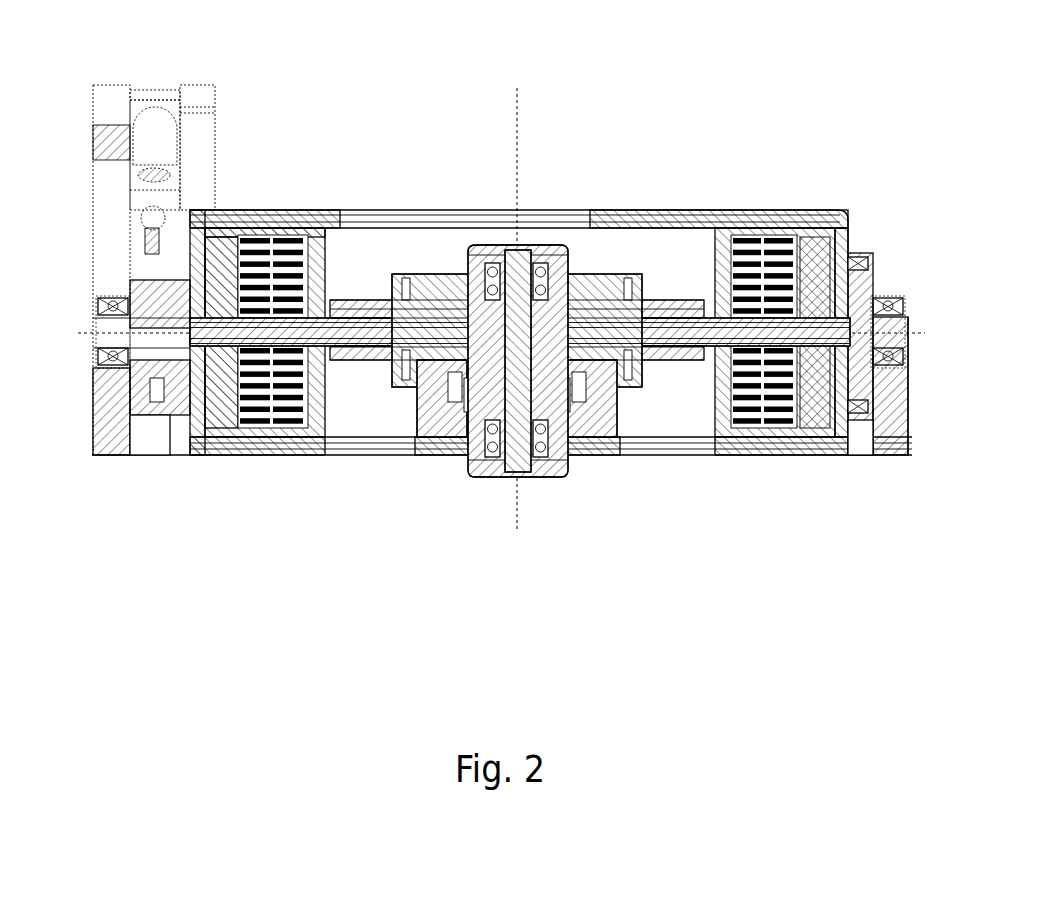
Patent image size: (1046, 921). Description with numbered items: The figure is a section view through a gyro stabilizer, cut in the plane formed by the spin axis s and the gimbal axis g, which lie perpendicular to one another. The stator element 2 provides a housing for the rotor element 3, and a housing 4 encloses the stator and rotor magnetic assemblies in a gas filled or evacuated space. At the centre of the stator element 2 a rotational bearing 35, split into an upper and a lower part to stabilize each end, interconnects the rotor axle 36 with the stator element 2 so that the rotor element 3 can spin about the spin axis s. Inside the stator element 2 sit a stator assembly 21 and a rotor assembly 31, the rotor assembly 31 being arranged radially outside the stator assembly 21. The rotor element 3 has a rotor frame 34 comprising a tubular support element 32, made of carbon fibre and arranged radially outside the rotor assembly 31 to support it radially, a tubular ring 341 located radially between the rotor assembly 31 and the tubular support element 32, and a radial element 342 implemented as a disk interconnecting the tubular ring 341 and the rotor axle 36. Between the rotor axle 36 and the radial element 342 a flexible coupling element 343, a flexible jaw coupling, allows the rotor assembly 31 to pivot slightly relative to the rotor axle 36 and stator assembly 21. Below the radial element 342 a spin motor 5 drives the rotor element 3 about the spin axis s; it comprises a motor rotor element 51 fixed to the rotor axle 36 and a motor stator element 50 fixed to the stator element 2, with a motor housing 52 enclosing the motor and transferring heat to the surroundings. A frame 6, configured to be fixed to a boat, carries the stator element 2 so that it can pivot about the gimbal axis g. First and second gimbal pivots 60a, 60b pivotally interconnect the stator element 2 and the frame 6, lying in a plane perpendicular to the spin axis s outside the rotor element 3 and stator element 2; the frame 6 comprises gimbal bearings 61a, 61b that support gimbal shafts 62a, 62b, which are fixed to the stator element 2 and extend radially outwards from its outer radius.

The stator element 2 is at (298, 228).
The rotor element 3 is at (293, 226).
The housing 4 is at (703, 213).
The spin motor 5 is at (515, 300).
The frame 6 is at (112, 422).
The stator assembly 21 is at (280, 427).
The rotor assembly 31 is at (253, 427).
The tubular support element 32 is at (223, 243).
The rotor frame 34 is at (520, 234).
The rotational bearing 35 is at (545, 420).
The rotor axle 36 is at (523, 273).
The tubular ring 341 is at (237, 237).
The radial element 342 is at (332, 297).
The flexible coupling element 343 is at (517, 283).
The motor stator element 50 is at (580, 385).
The motor rotor element 51 is at (563, 403).
The motor housing 52 is at (566, 467).
The first gimbal pivot 60a is at (88, 299).
The gimbal bearing 61a is at (126, 303).
The gimbal shaft 62a is at (125, 318).
The second gimbal pivot 60b is at (911, 298).
The gimbal bearing 61b is at (890, 304).
The gimbal shaft 62b is at (884, 318).
The gimbal axis g is at (491, 333).
The spin axis s is at (517, 298).